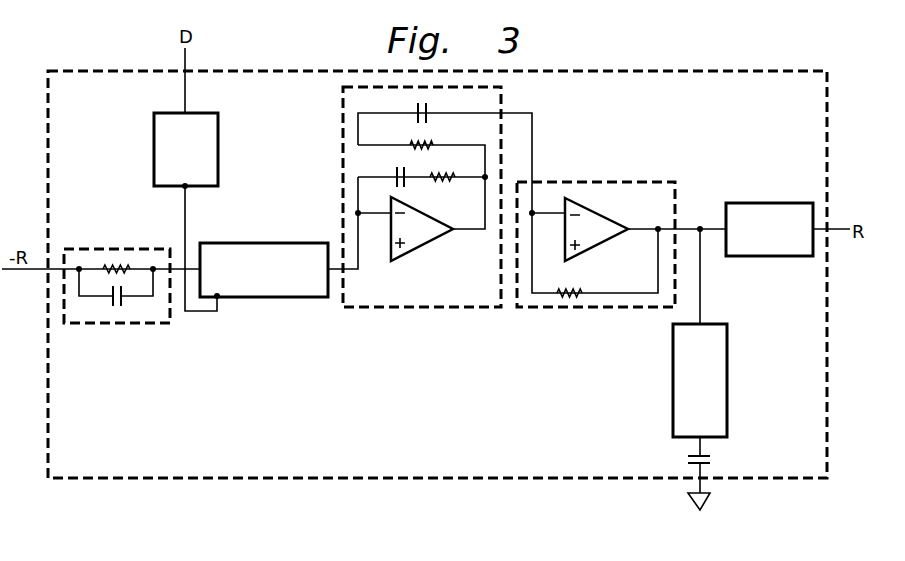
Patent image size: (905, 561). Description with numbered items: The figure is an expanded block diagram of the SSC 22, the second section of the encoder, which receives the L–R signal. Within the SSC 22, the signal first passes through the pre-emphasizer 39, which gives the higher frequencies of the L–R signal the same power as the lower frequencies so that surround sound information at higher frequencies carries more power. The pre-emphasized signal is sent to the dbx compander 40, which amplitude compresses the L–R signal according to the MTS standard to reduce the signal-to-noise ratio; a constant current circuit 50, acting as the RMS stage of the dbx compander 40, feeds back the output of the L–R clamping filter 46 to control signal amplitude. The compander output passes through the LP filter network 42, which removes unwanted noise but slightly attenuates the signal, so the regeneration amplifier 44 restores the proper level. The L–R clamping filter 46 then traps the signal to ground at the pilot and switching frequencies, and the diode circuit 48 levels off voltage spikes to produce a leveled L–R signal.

The SSC 22 is at (131, 480).
The pre-emphasizer 39 is at (107, 324).
The dbx compander 40 is at (279, 284).
The LP filter network 42 is at (343, 152).
The regeneration amplifier 44 is at (598, 182).
The L–R clamping filter 46 is at (783, 242).
The diode circuit 48 is at (713, 391).
The constant current circuit 50 is at (200, 164).